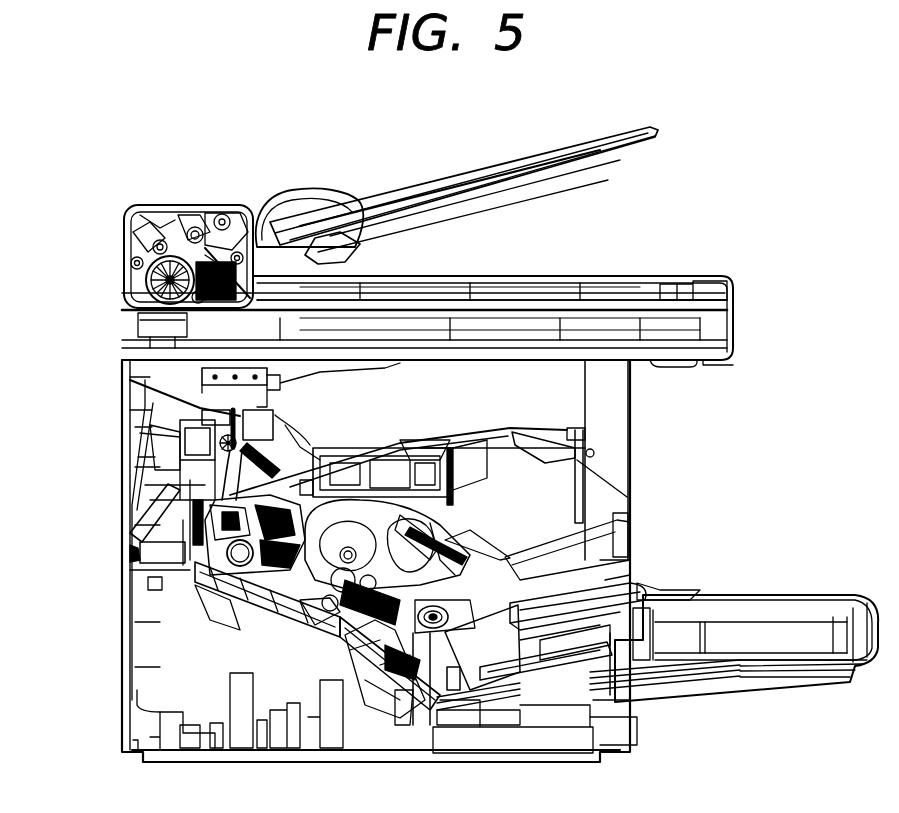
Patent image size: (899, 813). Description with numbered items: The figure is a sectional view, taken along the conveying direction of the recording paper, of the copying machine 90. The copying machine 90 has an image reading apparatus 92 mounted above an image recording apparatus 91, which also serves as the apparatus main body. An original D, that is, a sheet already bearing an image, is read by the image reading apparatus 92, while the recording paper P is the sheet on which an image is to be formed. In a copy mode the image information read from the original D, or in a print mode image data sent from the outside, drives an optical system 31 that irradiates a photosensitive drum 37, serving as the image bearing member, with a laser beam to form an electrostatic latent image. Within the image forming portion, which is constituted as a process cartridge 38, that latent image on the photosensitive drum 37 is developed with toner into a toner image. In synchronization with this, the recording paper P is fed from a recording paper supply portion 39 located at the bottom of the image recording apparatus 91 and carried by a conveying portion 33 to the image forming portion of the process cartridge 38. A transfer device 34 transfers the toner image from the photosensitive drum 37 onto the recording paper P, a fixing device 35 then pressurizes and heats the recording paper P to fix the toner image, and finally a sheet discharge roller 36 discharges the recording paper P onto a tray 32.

The copying machine 90 is at (211, 185).
The image reading apparatus 92 is at (110, 247).
The image recording apparatus 91 is at (118, 468).
The original D is at (455, 178).
The recording paper P is at (737, 660).
The optical system 31 is at (412, 452).
The tray 32 is at (350, 453).
The conveying portion 33 is at (455, 595).
The transfer device 34 is at (313, 631).
The fixing device 35 is at (157, 500).
The sheet discharge roller 36 is at (123, 432).
The photosensitive drum 37 is at (278, 610).
The process cartridge 38 is at (447, 520).
The recording paper supply portion 39 is at (643, 713).